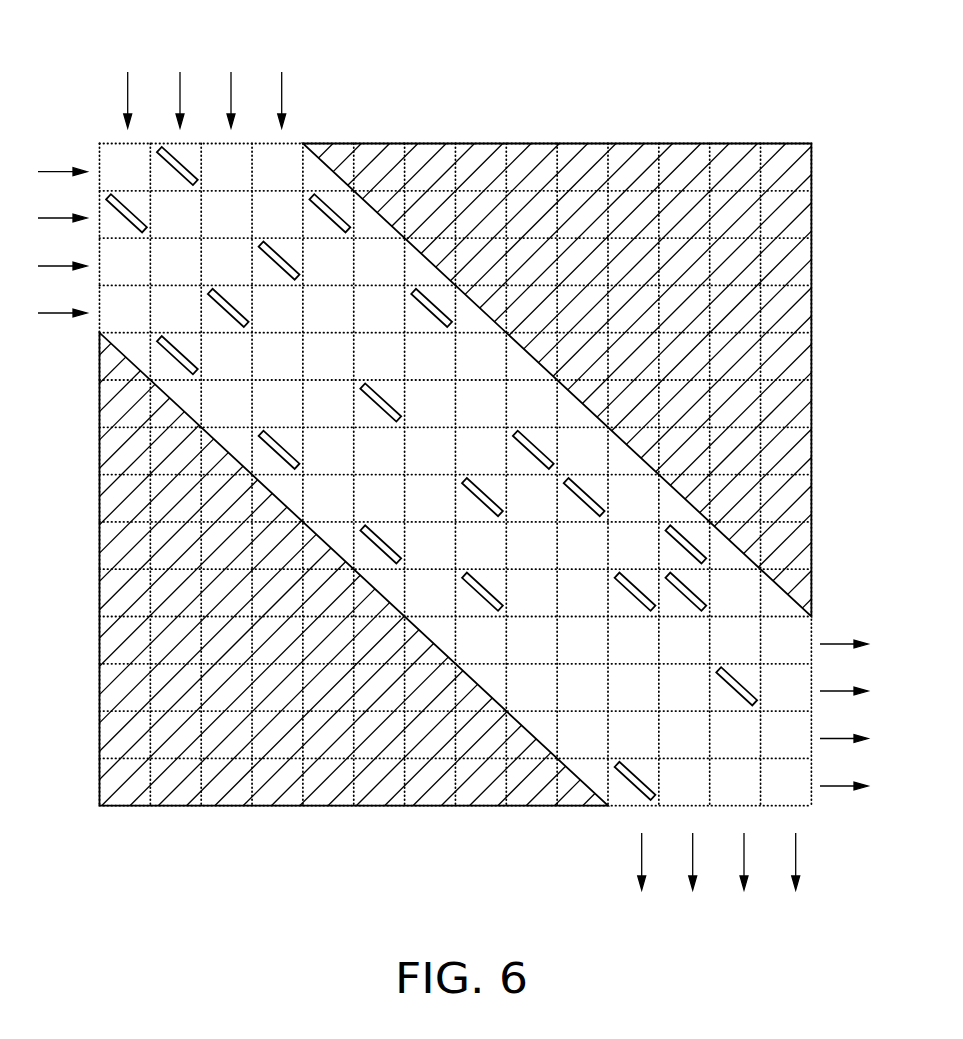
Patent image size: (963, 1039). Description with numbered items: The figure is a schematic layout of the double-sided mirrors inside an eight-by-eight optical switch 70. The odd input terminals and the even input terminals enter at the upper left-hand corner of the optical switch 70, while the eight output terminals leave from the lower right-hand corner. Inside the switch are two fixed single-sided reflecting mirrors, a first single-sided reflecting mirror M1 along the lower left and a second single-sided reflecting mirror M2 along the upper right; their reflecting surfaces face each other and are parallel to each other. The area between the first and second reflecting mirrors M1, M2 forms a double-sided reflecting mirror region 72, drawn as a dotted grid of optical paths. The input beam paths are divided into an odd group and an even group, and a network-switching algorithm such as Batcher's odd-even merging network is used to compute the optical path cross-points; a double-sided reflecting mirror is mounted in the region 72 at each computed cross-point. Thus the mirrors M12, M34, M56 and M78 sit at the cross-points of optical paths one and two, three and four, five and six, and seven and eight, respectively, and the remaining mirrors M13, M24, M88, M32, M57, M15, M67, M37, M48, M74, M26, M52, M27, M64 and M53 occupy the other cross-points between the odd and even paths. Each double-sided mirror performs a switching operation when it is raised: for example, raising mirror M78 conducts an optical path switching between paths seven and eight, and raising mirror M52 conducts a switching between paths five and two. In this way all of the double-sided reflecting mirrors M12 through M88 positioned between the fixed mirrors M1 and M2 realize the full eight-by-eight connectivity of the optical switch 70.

The optical switch 70 is at (686, 99).
The double-sided reflecting mirror region 72 is at (101, 144).
The first single-sided reflecting mirror M1 is at (110, 683).
The second single-sided reflecting mirror M2 is at (803, 253).
The double-sided reflecting mirror M12 is at (124, 218).
The double-sided reflecting mirror M13 is at (174, 360).
The double-sided reflecting mirror M15 is at (530, 455).
The double-sided reflecting mirror M24 is at (327, 218).
The double-sided reflecting mirror M26 is at (479, 597).
The double-sided reflecting mirror M27 is at (683, 597).
The double-sided reflecting mirror M32 is at (378, 407).
The double-sided reflecting mirror M34 is at (174, 171).
The double-sided reflecting mirror M37 is at (581, 502).
The double-sided reflecting mirror M48 is at (378, 549).
The double-sided reflecting mirror M52 is at (632, 597).
The double-sided reflecting mirror M53 is at (632, 786).
The double-sided reflecting mirror M56 is at (225, 313).
The double-sided reflecting mirror M57 is at (276, 455).
The double-sided reflecting mirror M64 is at (734, 691).
The double-sided reflecting mirror M67 is at (479, 502).
The double-sided reflecting mirror M74 is at (683, 549).
The double-sided reflecting mirror M78 is at (276, 266).
The double-sided reflecting mirror M88 is at (429, 313).